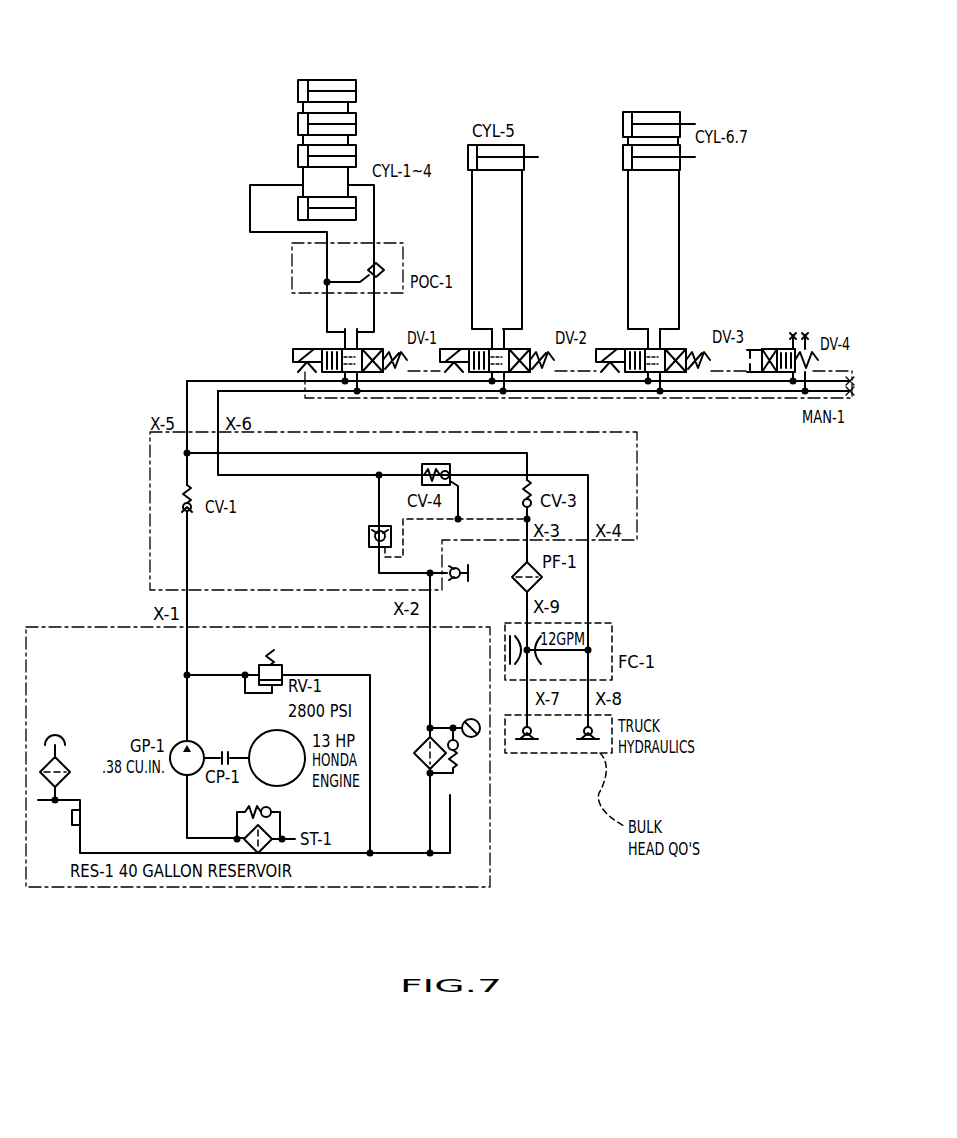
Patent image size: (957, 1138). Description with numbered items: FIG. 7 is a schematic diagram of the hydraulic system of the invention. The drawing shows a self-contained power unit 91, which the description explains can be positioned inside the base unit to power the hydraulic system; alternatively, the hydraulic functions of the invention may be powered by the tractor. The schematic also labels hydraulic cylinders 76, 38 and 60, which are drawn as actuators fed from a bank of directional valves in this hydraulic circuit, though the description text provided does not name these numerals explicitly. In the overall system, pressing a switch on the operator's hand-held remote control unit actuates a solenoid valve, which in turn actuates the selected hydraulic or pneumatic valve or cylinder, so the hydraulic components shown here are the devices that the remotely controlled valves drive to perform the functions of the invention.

The hydraulic cylinders CYL-1 to CYL-4 76 is at (356, 91).
The hydraulic cylinder CYL-5 38 is at (500, 248).
The hydraulic cylinders CYL-6 and CYL-7 60 is at (658, 235).
The self-contained power unit 91 is at (251, 740).